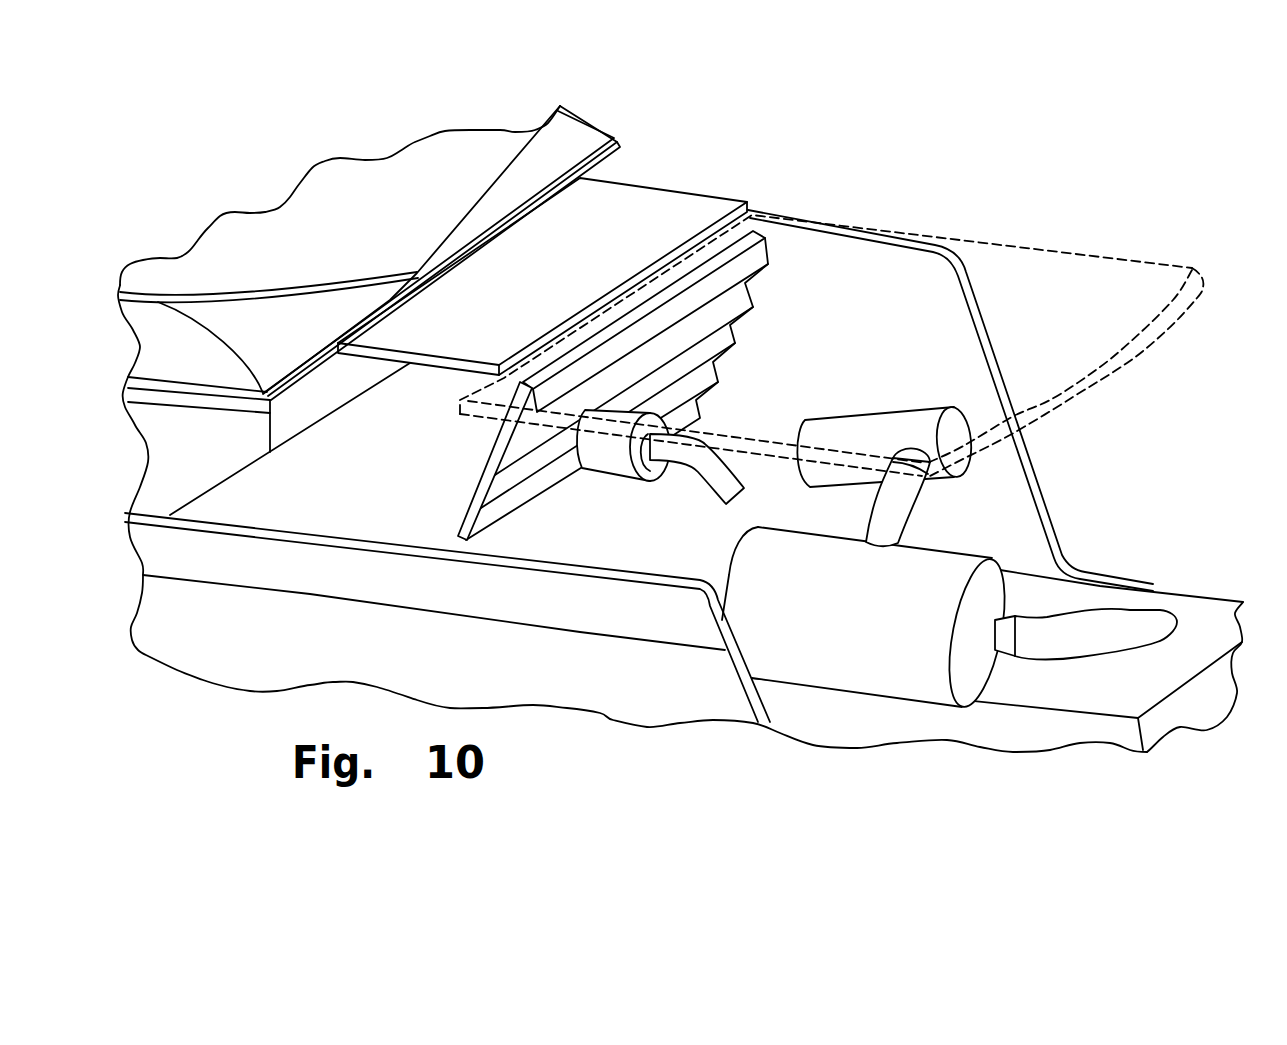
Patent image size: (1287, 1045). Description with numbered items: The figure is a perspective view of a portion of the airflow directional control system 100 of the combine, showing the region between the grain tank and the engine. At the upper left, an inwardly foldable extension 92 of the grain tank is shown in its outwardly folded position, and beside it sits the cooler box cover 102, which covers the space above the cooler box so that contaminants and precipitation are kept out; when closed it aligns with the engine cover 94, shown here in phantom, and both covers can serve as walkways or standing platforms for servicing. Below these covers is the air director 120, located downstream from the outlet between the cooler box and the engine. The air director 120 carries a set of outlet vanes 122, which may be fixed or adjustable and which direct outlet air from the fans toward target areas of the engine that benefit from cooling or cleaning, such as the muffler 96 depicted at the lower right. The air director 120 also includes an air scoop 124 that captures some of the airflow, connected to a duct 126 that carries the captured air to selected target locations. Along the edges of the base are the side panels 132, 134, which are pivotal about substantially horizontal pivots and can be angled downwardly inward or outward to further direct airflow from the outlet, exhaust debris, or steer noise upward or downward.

The inwardly foldable extensions 92 is at (535, 168).
The engine cover 94 is at (831, 335).
The muffler 96 is at (938, 693).
The airflow directional control system 100 is at (799, 142).
The cooler box cover 102 is at (673, 197).
The air director 120 is at (452, 557).
The outlet vanes 122 is at (569, 385).
The air scoop 124 is at (568, 533).
The duct 126 is at (650, 553).
The side panel 132 is at (732, 700).
The side panel 134 is at (1062, 547).